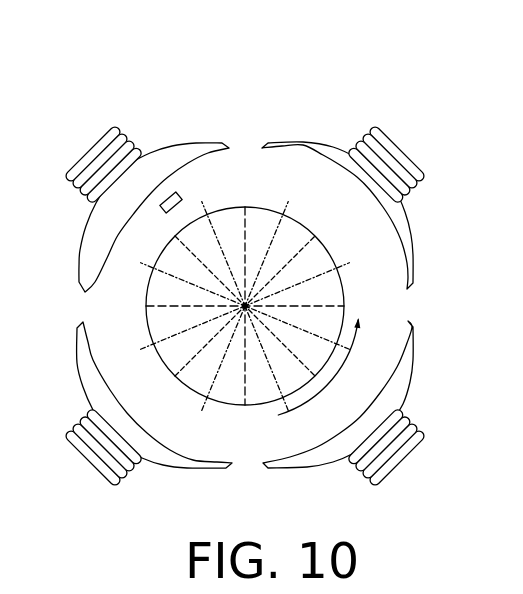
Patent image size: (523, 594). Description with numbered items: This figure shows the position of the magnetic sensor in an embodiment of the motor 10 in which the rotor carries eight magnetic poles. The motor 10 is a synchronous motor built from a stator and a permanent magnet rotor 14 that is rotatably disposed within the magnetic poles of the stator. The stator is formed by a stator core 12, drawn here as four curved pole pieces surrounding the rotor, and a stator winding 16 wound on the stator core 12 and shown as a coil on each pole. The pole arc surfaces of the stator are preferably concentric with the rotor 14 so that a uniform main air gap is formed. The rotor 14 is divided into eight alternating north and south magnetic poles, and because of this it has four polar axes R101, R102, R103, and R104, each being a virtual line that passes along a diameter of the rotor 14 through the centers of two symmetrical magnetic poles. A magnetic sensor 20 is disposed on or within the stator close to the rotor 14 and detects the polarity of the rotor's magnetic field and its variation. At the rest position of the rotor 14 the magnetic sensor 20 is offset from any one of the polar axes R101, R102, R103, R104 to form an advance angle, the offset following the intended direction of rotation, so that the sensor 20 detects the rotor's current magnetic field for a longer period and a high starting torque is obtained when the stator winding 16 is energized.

The motor 10 is at (137, 58).
The stator core 12 is at (168, 152).
The permanent magnet rotor 14 is at (290, 293).
The stator winding 16 is at (106, 152).
The magnetic sensor 20 is at (160, 204).
The polar axis R101 is at (352, 263).
The polar axis R102 is at (289, 205).
The polar axis R103 is at (204, 206).
The polar axis R104 is at (147, 266).